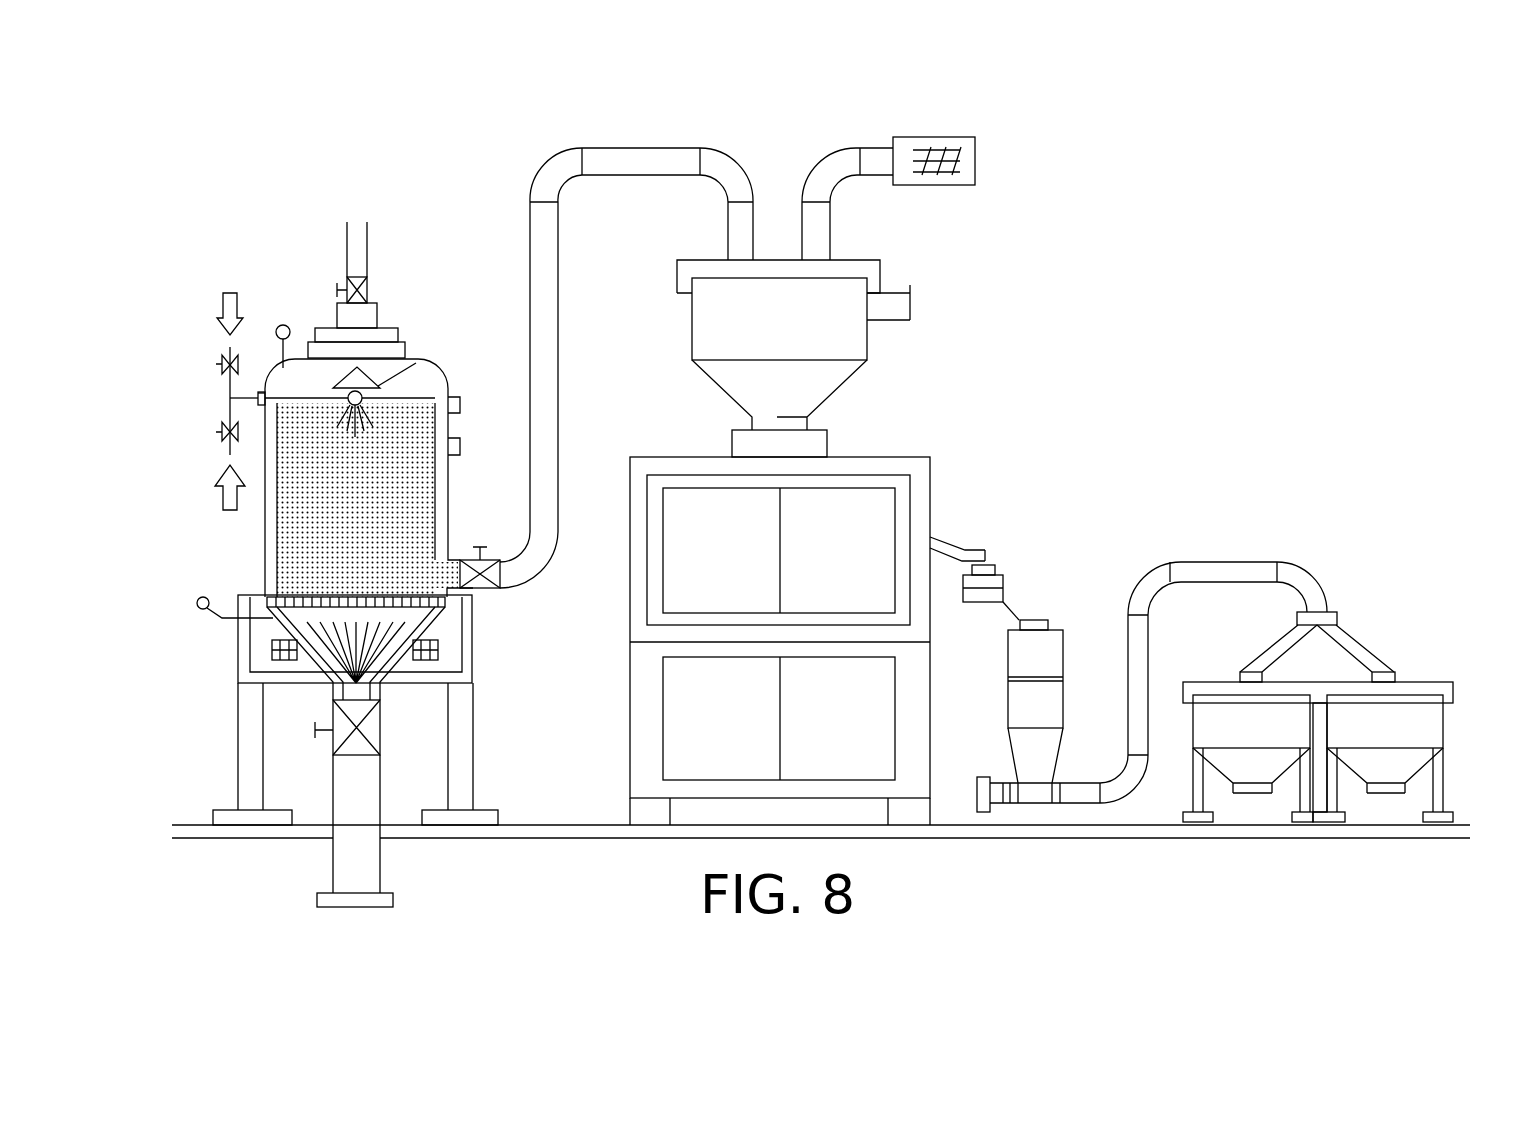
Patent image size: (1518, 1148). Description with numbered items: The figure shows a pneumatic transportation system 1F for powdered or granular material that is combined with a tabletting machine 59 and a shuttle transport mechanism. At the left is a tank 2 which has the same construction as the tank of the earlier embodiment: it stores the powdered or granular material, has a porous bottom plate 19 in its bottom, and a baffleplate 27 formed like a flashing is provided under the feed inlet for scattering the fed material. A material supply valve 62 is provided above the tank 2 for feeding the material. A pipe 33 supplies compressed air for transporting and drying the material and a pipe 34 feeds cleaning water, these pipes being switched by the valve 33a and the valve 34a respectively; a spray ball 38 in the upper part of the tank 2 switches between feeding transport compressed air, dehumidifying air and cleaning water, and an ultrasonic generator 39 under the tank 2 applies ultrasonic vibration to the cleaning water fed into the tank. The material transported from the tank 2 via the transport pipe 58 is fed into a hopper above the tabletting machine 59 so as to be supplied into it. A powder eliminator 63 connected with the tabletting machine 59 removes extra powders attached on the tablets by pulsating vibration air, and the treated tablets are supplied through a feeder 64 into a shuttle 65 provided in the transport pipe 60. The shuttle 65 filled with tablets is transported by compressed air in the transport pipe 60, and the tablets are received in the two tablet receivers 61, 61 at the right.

The pneumatic transport system 1F is at (229, 236).
The tank 2 is at (448, 489).
The porous bottom plate 19 is at (430, 600).
The baffleplate 27 is at (347, 378).
The pipe 33 is at (224, 383).
The valve 33a is at (223, 360).
The pipe 34 is at (229, 410).
The valve 34a is at (224, 443).
The spray ball 38 is at (362, 398).
The ultrasonic generator 39 is at (437, 650).
The transport pipe 58 is at (558, 413).
The tabletting machine 59 is at (930, 493).
The transport pipe 60 is at (1148, 635).
The tablet receivers 61 is at (1198, 728).
The material supply valve 62 is at (370, 290).
The powder eliminator 63 is at (962, 548).
The feeder 64 is at (1066, 718).
The shuttle 65 is at (1023, 793).